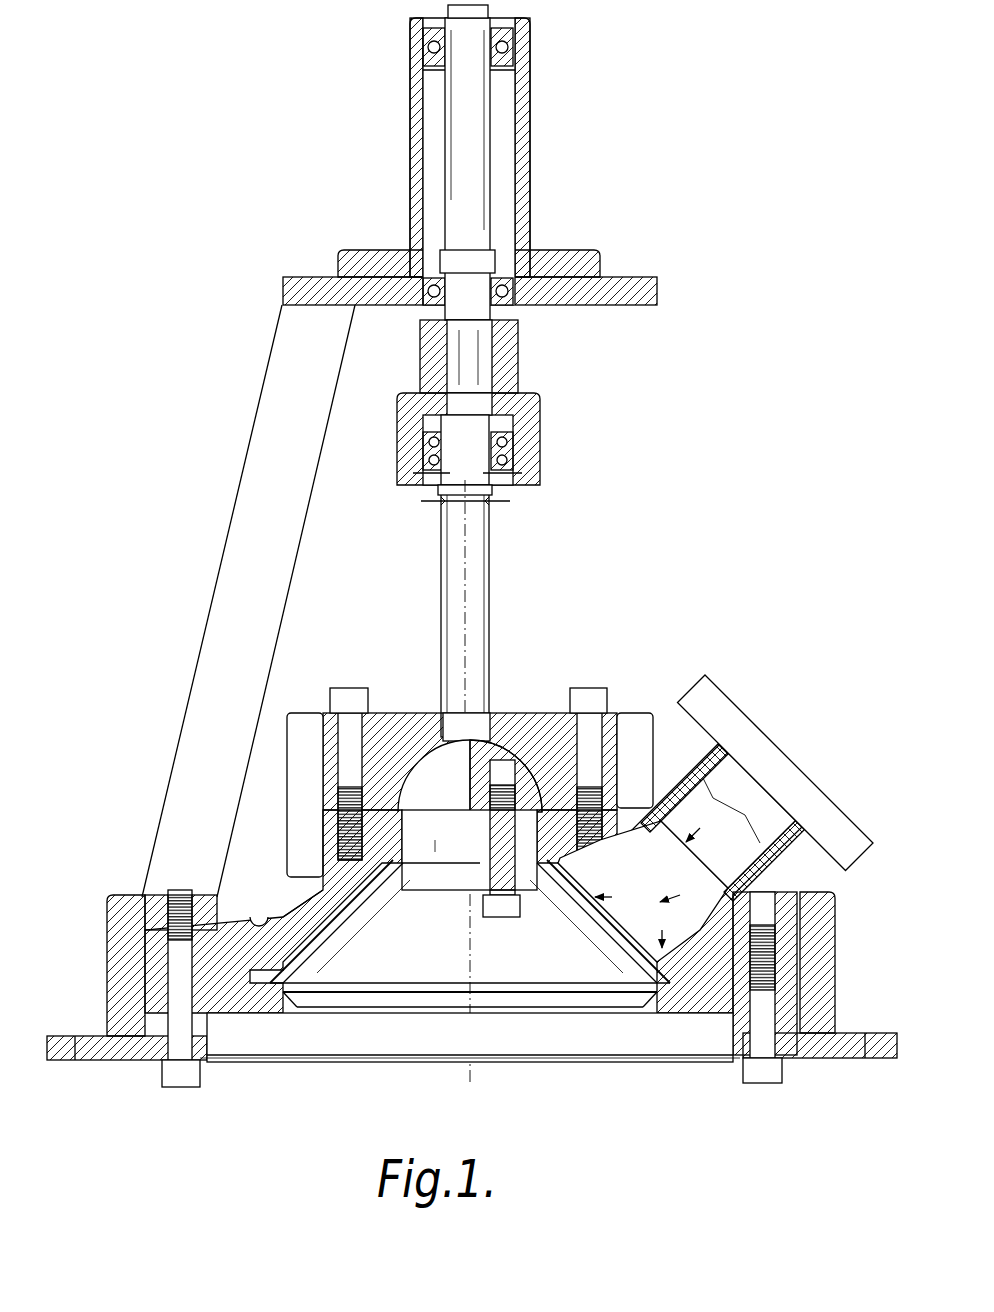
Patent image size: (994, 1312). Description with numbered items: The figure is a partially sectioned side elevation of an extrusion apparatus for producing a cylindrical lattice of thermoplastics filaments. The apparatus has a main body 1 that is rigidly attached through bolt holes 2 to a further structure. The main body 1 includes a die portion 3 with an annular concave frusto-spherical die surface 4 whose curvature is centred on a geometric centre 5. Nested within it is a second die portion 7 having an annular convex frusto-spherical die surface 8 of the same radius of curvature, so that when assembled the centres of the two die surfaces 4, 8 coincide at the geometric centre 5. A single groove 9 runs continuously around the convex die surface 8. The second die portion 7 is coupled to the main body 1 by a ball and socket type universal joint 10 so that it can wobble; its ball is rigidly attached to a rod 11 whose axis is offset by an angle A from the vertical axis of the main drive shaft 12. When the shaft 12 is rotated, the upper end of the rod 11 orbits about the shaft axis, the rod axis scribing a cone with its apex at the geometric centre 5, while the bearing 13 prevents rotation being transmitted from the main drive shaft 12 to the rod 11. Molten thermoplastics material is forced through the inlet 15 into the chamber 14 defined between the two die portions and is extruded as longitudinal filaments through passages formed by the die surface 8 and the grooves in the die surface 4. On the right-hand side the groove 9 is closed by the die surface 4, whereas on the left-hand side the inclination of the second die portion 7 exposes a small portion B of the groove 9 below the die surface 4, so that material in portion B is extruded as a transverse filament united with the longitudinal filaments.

The main body 1 is at (203, 752).
The bolt holes 2 is at (75, 1036).
The die portion 3 is at (228, 1000).
The die surface 4 is at (268, 935).
The geometric centre 5 is at (442, 745).
The second die portion 7 is at (447, 958).
The die surface 8 is at (290, 1010).
The groove 9 is at (405, 997).
The universal joint 10 is at (507, 717).
The rod 11 is at (476, 571).
The main drive shaft 12 is at (486, 180).
The bearing 13 is at (512, 456).
The chamber 14 is at (312, 905).
The inlet 15 is at (715, 827).
The offset angle A is at (467, 493).
The portion of groove B is at (283, 1030).